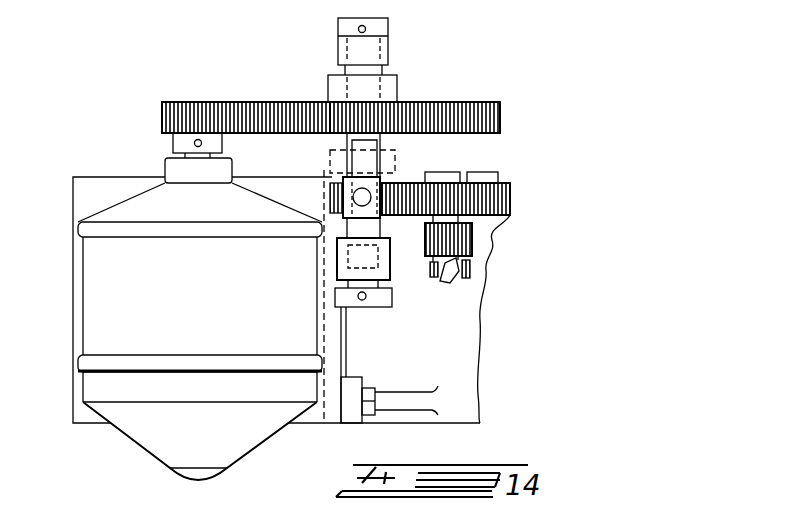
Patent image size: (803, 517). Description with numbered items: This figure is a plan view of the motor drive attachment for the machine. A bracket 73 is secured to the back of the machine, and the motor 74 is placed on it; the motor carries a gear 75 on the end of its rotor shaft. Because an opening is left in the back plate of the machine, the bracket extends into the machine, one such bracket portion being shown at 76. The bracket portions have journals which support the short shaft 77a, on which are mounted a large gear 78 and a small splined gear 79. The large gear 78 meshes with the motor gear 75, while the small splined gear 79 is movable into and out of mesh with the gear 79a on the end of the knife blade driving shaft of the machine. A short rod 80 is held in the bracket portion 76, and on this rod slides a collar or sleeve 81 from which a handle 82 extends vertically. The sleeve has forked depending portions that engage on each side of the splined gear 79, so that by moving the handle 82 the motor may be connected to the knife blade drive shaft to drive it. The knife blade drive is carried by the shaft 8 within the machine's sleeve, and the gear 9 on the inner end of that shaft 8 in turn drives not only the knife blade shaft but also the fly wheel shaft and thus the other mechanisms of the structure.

The shaft 8 is at (443, 270).
The gear 9 is at (473, 242).
The bracket 73 is at (90, 415).
The motor 74 is at (125, 310).
The gear 75 is at (177, 113).
The bracket portion 76 is at (391, 268).
The short shaft 77a is at (394, 157).
The large gear 78 is at (467, 102).
The small splined gear 79 is at (329, 192).
The gear 79a is at (510, 195).
The short rod 80 is at (365, 160).
The collar or sleeve 81 is at (345, 220).
The handle 82 is at (370, 193).